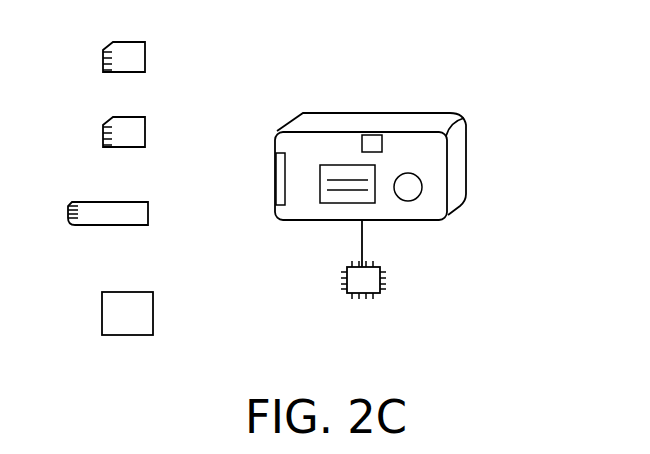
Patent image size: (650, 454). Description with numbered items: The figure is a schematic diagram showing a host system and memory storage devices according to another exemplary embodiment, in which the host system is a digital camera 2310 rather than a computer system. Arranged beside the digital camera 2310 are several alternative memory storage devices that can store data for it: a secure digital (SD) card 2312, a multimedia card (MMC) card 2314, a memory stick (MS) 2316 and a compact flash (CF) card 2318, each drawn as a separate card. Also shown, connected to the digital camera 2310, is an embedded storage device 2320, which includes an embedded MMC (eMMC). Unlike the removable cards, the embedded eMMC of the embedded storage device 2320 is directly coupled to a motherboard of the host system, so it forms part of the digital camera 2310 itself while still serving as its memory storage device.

The digital camera 2310 is at (468, 153).
The secure digital (SD) card 2312 is at (145, 50).
The multimedia card (MMC) card 2314 is at (145, 125).
The memory stick (MS) 2316 is at (148, 213).
The compact flash (CF) card 2318 is at (153, 306).
The embedded storage device 2320 is at (386, 281).